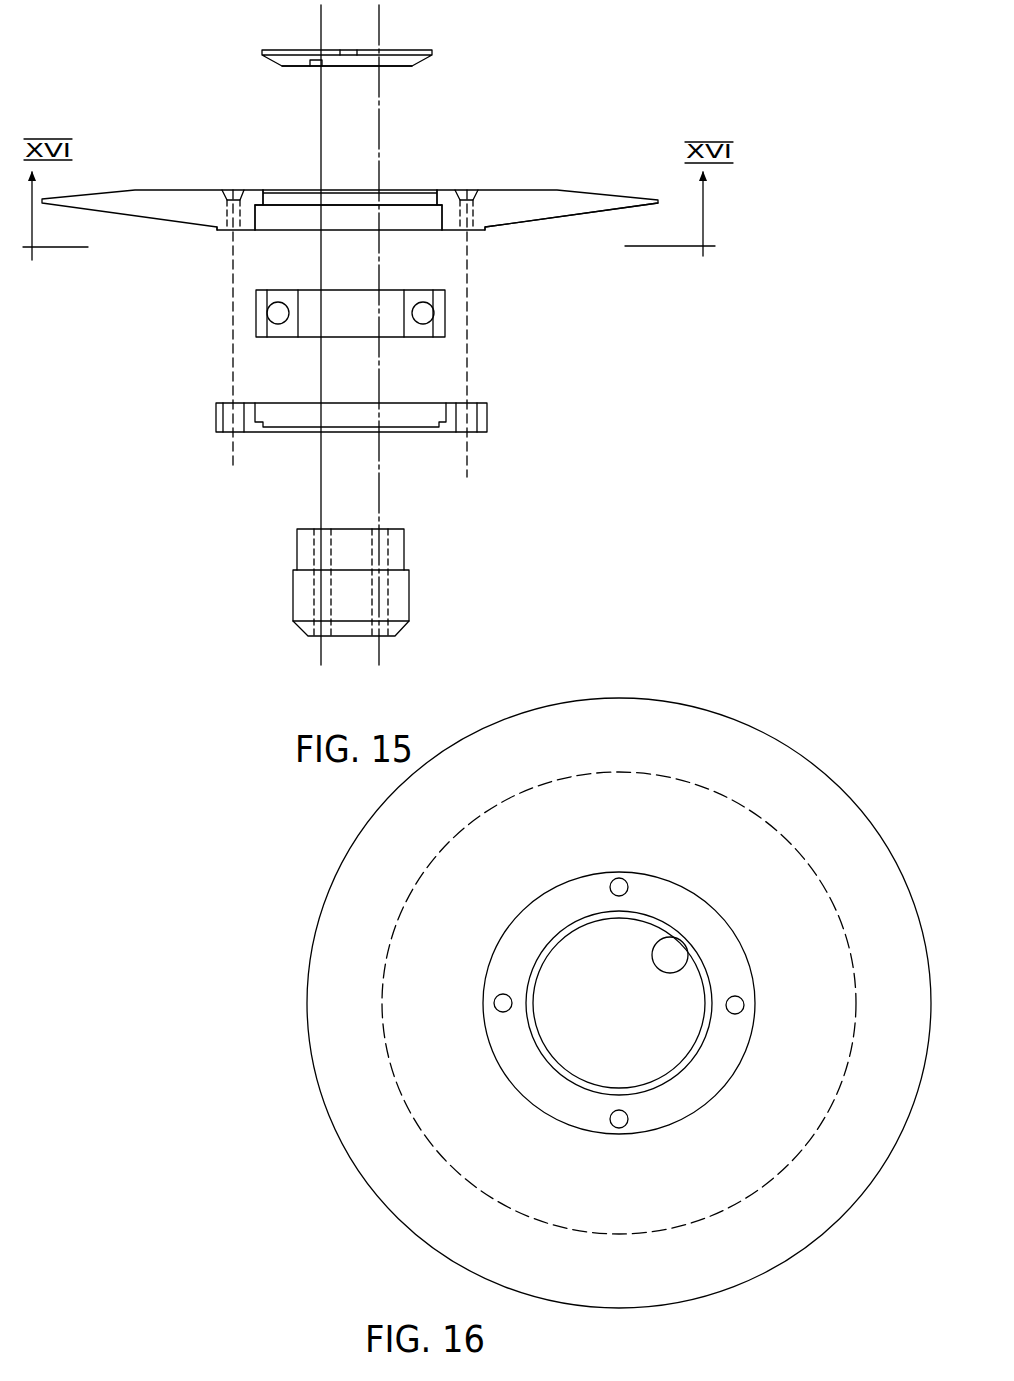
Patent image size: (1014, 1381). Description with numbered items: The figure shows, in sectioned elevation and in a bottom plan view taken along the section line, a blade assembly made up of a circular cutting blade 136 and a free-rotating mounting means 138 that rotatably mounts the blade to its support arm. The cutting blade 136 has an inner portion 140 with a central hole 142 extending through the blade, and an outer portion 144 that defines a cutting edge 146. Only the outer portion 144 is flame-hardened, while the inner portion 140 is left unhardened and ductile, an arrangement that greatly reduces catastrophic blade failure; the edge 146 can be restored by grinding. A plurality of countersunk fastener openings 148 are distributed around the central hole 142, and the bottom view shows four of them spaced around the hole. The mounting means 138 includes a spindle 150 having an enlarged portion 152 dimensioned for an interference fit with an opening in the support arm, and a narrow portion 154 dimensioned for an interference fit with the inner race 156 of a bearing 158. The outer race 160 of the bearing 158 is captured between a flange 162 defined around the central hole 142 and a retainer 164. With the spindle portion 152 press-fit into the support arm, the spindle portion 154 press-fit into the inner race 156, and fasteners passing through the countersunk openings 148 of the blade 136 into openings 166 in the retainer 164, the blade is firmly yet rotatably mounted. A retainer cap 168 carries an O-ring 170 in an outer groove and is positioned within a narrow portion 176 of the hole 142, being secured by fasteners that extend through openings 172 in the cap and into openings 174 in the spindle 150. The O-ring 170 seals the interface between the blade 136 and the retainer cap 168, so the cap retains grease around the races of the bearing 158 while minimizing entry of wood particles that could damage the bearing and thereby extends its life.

In FIG. 15, the circular cutting blade 136 is at (585, 188).
In FIG. 15, the free-rotating mounting means 138 is at (480, 348).
In FIG. 15, the inner portion 140 is at (180, 231).
In FIG. 16, the inner portion 140 is at (490, 909).
In FIG. 15, the central hole 142 is at (303, 218).
In FIG. 16, the central hole 142 is at (664, 952).
In FIG. 15, the outer portion 144 is at (636, 212).
In FIG. 16, the outer portion 144 is at (644, 756).
In FIG. 16, the cutting edge 146 is at (552, 710).
In FIG. 15, the countersunk fastener openings 148 is at (230, 190).
In FIG. 16, the countersunk fastener openings 148 is at (623, 880).
In FIG. 15, the spindle 150 is at (412, 583).
In FIG. 15, the enlarged portion 152 is at (410, 600).
In FIG. 15, the narrow portion 154 is at (406, 548).
In FIG. 15, the inner race 156 is at (298, 315).
In FIG. 15, the bearing 158 is at (452, 287).
In FIG. 15, the outer race 160 is at (447, 313).
In FIG. 15, the flange 162 is at (442, 206).
In FIG. 16, the flange 162 is at (690, 1060).
In FIG. 15, the retainer 164 is at (489, 420).
In FIG. 15, the openings 166 is at (234, 433).
In FIG. 15, the retainer cap 168 is at (302, 52).
In FIG. 15, the O-ring 170 is at (434, 56).
In FIG. 15, the openings 172 is at (383, 55).
In FIG. 15, the openings 174 is at (322, 640).
In FIG. 15, the narrow portion 176 is at (337, 198).